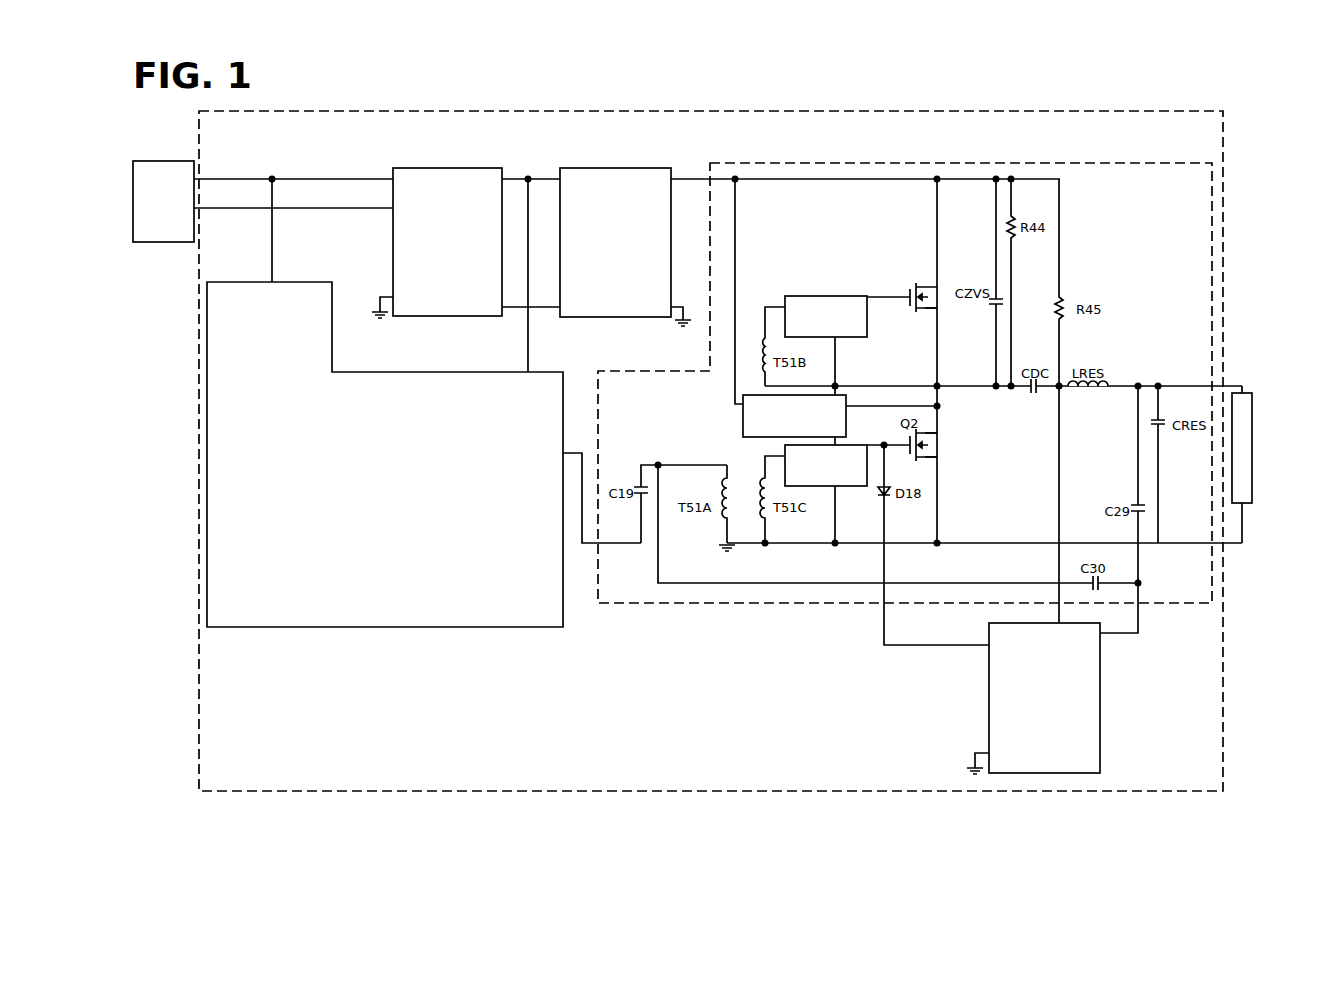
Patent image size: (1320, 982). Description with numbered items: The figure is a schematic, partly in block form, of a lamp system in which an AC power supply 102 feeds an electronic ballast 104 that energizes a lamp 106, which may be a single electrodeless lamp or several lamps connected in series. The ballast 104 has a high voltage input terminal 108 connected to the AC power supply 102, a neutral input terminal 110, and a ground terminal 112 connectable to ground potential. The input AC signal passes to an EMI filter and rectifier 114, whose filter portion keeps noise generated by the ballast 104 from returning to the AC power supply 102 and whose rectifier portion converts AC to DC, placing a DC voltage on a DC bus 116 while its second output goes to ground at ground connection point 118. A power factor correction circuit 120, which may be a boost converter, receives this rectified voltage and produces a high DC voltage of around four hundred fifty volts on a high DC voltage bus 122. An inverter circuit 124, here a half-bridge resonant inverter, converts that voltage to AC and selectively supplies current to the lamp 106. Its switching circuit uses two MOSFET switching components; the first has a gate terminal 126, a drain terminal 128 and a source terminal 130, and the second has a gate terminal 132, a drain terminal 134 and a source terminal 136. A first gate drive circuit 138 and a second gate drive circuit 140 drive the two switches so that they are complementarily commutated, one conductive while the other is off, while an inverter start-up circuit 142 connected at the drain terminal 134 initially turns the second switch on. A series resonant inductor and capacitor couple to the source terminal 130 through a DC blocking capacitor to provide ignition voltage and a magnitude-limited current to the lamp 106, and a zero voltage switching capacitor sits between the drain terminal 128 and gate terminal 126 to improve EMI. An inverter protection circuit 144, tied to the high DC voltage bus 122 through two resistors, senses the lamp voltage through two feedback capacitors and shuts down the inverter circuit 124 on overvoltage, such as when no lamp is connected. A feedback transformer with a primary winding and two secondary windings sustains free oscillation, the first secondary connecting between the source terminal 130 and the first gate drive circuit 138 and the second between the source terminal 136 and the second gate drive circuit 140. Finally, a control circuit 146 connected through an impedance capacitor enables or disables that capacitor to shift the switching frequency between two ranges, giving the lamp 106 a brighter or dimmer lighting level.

The AC power supply 102 is at (168, 161).
The electronic ballast 104 is at (720, 110).
The lamp 106 is at (1253, 495).
The high voltage input terminal 108 is at (242, 178).
The neutral input terminal 110 is at (226, 209).
The ground terminal 112 is at (380, 297).
The EMI filter and rectifier 114 is at (425, 168).
The DC bus 116 is at (513, 178).
The ground connection point 118 is at (513, 308).
The power factor correction circuit 120 is at (601, 168).
The high DC voltage bus 122 is at (689, 178).
The inverter circuit 124 is at (803, 163).
The gate terminal of first switching component Q1 126 is at (893, 299).
The drain terminal of first switching component Q1 128 is at (931, 285).
The source terminal of first switching component Q1 130 is at (938, 308).
The gate terminal of second switching component Q2 132 is at (884, 444).
The drain terminal of second switching component Q2 134 is at (938, 431).
The source terminal of second switching component Q2 136 is at (938, 458).
The first gate drive circuit 138 is at (818, 296).
The second gate drive circuit 140 is at (852, 487).
The inverter start-up circuit 142 is at (743, 424).
The inverter protection circuit 144 is at (989, 712).
The control circuit 146 is at (580, 628).